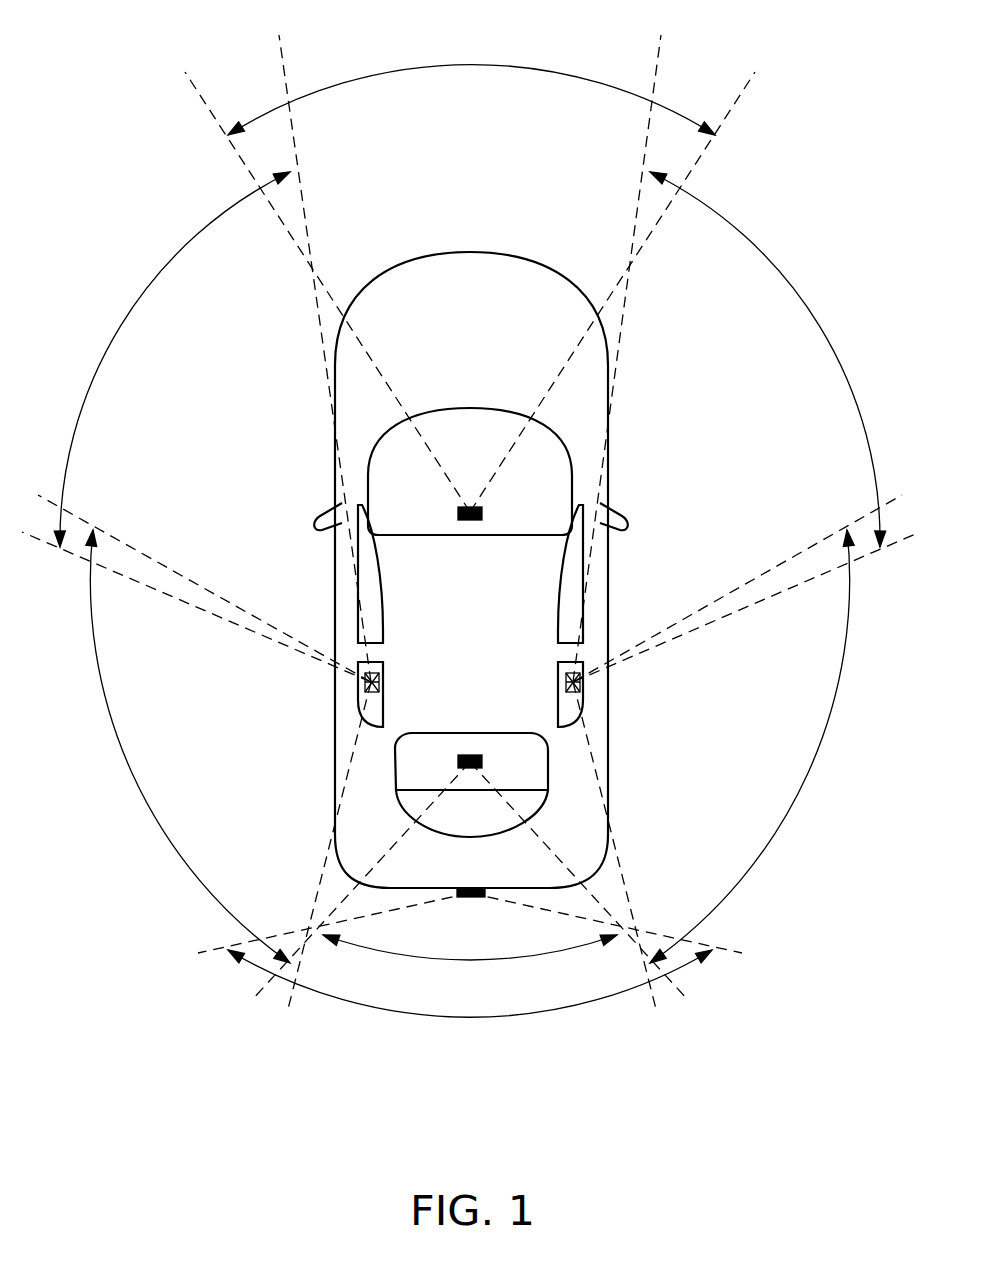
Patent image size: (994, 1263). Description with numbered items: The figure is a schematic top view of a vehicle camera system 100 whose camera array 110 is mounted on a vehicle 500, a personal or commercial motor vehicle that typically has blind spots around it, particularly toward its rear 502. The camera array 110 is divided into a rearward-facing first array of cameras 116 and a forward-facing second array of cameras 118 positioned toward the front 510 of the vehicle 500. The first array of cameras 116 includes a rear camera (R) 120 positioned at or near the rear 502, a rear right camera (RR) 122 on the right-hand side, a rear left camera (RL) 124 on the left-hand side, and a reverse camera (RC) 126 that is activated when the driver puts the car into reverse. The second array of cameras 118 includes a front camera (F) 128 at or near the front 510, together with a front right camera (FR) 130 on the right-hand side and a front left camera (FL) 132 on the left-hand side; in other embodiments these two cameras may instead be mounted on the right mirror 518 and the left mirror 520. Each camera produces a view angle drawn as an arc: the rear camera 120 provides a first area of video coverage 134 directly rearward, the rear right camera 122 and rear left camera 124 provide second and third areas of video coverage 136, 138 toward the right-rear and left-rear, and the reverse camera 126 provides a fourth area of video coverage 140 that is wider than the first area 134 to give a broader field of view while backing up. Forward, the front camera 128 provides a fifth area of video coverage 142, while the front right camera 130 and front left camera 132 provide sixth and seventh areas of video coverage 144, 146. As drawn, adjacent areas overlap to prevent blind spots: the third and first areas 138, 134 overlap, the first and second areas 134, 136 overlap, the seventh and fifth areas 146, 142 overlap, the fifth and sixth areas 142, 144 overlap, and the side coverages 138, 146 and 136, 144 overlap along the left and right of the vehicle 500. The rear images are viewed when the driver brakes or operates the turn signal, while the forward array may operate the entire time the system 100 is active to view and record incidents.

The vehicle camera system 100 is at (124, 62).
The camera array 110 is at (188, 185).
The first array of cameras 116 is at (690, 771).
The second array of cameras 118 is at (654, 363).
The rear camera (R) 120 is at (473, 755).
The rear right camera (RR) 122 is at (584, 678).
The rear left camera (RL) 124 is at (356, 664).
The reverse camera (RC) 126 is at (468, 899).
The front camera (F) 128 is at (473, 521).
The front right camera (FR) 130 is at (583, 697).
The front left camera (FL) 132 is at (357, 703).
The first area of video coverage 134 is at (495, 960).
The second area of video coverage 136 is at (836, 678).
The third area of video coverage 138 is at (123, 748).
The fourth area of video coverage 140 is at (560, 1010).
The fifth area of video coverage 142 is at (500, 66).
The sixth area of video coverage 144 is at (820, 330).
The seventh area of video coverage 146 is at (135, 305).
The vehicle 500 is at (608, 607).
The rear 502 is at (582, 875).
The front 510 is at (505, 252).
The right mirror 518 is at (614, 505).
The left mirror 520 is at (328, 505).